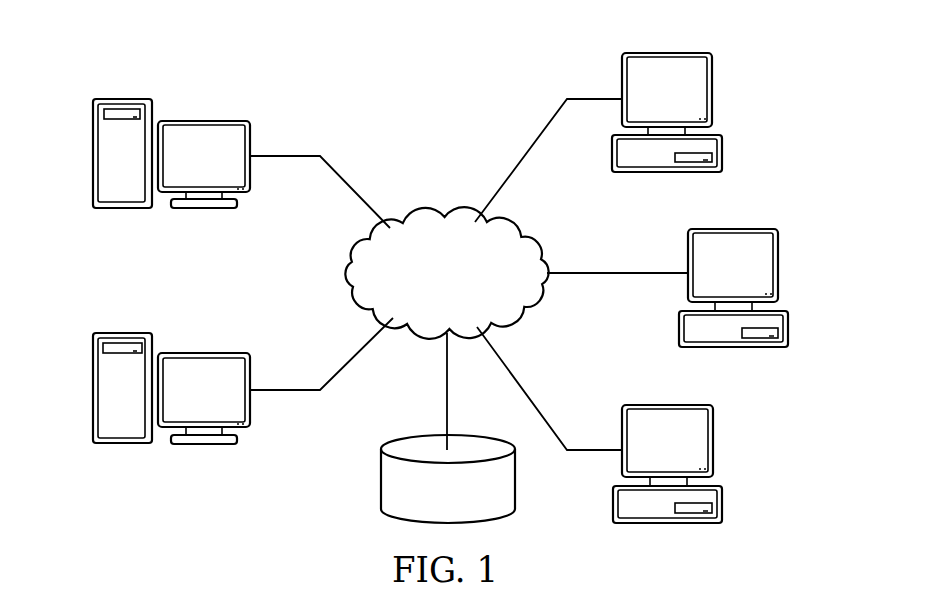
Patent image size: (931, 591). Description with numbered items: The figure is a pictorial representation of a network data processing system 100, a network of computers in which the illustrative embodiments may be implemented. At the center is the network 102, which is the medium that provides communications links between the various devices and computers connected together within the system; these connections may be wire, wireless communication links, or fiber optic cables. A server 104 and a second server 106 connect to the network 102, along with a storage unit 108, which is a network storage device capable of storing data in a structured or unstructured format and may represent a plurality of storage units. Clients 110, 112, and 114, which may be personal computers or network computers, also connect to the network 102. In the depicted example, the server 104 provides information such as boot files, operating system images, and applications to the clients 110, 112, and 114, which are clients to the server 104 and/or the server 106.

The network data processing system 100 is at (320, 68).
The network 102 is at (440, 215).
The server 104 is at (93, 153).
The server 106 is at (93, 387).
The storage unit 108 is at (381, 480).
The client 110 is at (722, 152).
The client 112 is at (788, 328).
The client 114 is at (722, 503).